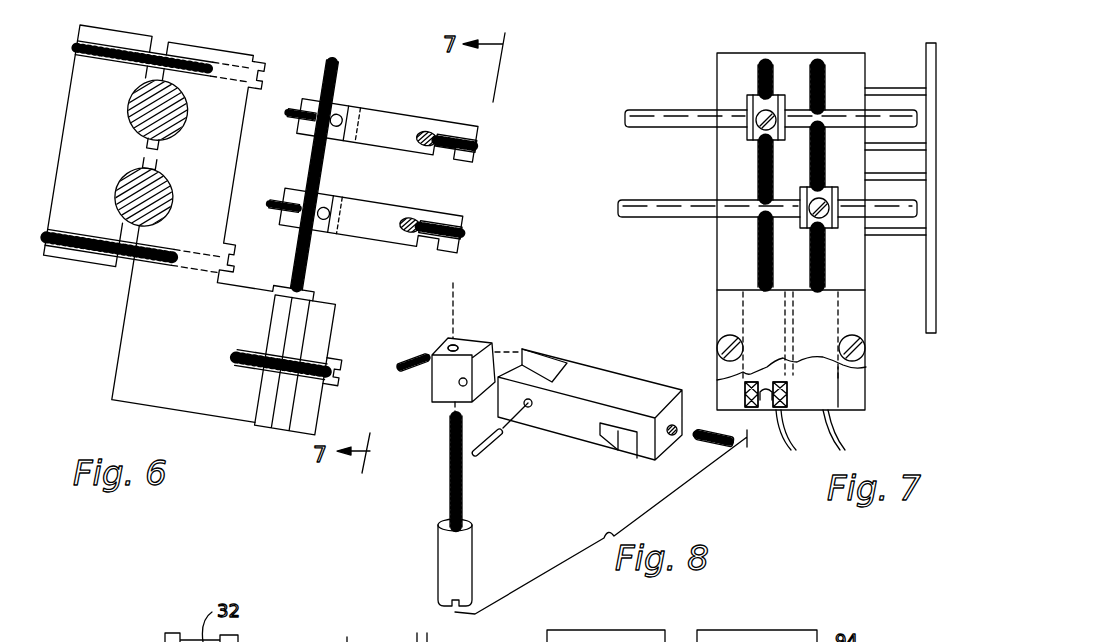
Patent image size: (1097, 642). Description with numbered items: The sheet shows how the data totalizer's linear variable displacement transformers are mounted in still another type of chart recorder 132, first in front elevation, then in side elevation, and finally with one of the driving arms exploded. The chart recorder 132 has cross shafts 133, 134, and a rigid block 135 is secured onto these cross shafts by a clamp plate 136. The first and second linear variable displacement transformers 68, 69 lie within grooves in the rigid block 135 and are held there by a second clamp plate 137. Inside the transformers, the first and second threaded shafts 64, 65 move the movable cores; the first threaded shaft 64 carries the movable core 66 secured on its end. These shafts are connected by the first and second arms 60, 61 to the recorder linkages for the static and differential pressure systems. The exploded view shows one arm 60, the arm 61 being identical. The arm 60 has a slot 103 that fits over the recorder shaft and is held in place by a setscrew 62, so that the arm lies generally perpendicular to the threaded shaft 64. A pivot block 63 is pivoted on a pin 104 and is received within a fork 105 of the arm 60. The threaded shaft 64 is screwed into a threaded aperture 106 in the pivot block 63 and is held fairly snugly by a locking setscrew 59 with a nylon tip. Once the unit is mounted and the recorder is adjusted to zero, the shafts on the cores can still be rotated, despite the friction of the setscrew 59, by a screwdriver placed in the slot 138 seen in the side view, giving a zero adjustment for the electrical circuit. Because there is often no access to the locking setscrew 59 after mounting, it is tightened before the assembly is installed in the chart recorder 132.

In FIG. 6, the locking setscrew 59 is at (295, 108).
In FIG. 8, the locking setscrew 59 is at (406, 349).
In FIG. 6, the first arm 60 is at (386, 108).
In FIG. 7, the first arm 60 is at (752, 135).
In FIG. 8, the first arm 60 is at (606, 379).
In FIG. 6, the second arm 61 is at (377, 201).
In FIG. 7, the second arm 61 is at (832, 187).
In FIG. 6, the setscrew 62 is at (438, 184).
In FIG. 8, the setscrew 62 is at (707, 444).
In FIG. 8, the pivot block 63 is at (476, 348).
In FIG. 6, the first threaded shaft 64 is at (307, 268).
In FIG. 7, the first threaded shaft 64 is at (758, 73).
In FIG. 8, the first threaded shaft 64 is at (450, 447).
In FIG. 7, the second threaded shaft 65 is at (823, 76).
In FIG. 7, the movable core 66 is at (773, 382).
In FIG. 8, the movable core 66 is at (472, 551).
In FIG. 7, the first linear variable displacement transformer 68 is at (790, 372).
In FIG. 7, the second linear variable displacement transformer 69 is at (827, 383).
In FIG. 8, the slot 103 is at (628, 452).
In FIG. 8, the pin 104 is at (496, 448).
In FIG. 8, the fork 105 is at (547, 356).
In FIG. 8, the threaded aperture 106 is at (456, 346).
In FIG. 7, the chart recorder 132 is at (925, 75).
In FIG. 6, the cross shaft 133 is at (190, 66).
In FIG. 6, the cross shaft 134 is at (158, 190).
In FIG. 6, the rigid block 135 is at (130, 304).
In FIG. 6, the clamp plate 136 is at (64, 121).
In FIG. 6, the clamp plate 137 is at (336, 332).
In FIG. 7, the slot 138 is at (770, 393).